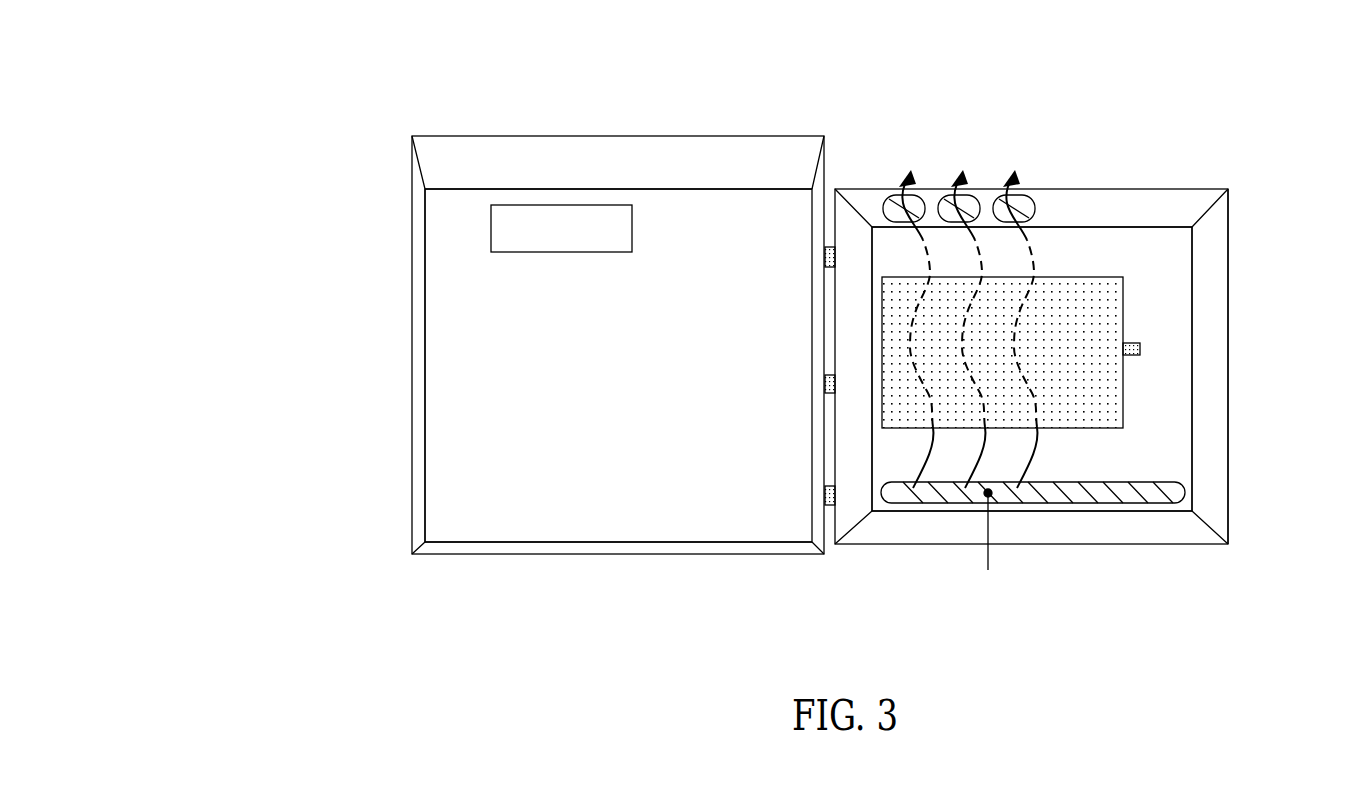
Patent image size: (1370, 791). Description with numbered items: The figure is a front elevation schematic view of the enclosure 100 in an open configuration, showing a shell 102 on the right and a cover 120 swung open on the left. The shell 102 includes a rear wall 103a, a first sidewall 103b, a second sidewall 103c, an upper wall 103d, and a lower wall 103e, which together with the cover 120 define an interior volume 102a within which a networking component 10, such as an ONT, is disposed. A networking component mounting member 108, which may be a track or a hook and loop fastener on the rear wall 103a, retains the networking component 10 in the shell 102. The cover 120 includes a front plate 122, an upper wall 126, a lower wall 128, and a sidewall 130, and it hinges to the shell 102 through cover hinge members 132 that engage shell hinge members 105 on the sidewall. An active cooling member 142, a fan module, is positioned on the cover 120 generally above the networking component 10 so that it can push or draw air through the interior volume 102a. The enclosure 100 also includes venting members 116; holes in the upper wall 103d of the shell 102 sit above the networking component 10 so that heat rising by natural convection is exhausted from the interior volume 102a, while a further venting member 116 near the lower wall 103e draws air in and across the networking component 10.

The enclosure 100 is at (328, 98).
The cover 120 is at (518, 135).
The front plate 122 is at (470, 345).
The upper wall 126 is at (700, 157).
The lower wall 128 is at (518, 553).
The sidewall 130 is at (425, 417).
The active cooling member 142 is at (490, 228).
The cover hinge member 132 is at (835, 247).
The shell 102 is at (1197, 188).
The interior volume 102a is at (1135, 292).
The rear wall 103a is at (1138, 257).
The first sidewall 103b is at (852, 506).
The second sidewall 103c is at (1207, 418).
The upper wall 103d is at (1157, 208).
The lower wall 103e is at (1108, 533).
The networking component 10 is at (1098, 313).
The networking component mounting member 108 is at (1140, 349).
The shell hinge member 105 is at (835, 247).
The venting member 116 is at (957, 200).